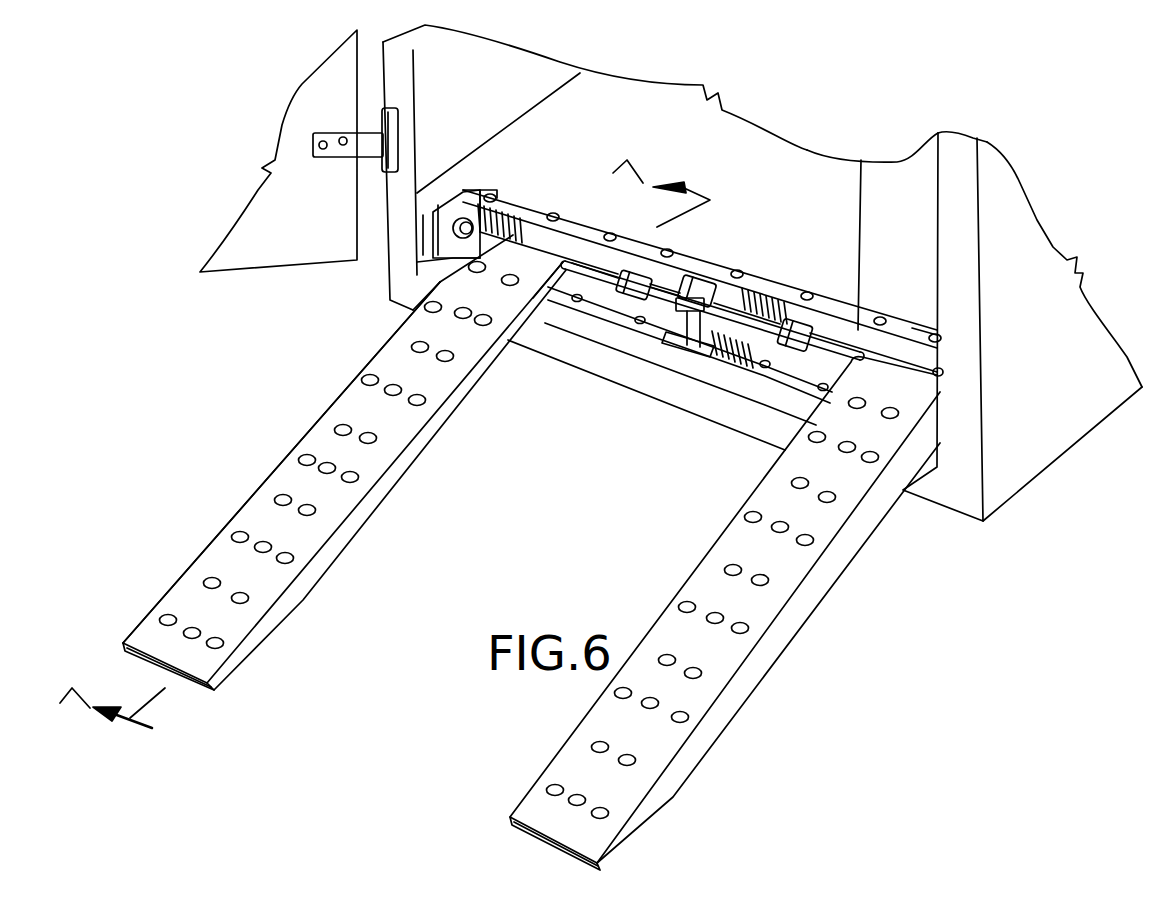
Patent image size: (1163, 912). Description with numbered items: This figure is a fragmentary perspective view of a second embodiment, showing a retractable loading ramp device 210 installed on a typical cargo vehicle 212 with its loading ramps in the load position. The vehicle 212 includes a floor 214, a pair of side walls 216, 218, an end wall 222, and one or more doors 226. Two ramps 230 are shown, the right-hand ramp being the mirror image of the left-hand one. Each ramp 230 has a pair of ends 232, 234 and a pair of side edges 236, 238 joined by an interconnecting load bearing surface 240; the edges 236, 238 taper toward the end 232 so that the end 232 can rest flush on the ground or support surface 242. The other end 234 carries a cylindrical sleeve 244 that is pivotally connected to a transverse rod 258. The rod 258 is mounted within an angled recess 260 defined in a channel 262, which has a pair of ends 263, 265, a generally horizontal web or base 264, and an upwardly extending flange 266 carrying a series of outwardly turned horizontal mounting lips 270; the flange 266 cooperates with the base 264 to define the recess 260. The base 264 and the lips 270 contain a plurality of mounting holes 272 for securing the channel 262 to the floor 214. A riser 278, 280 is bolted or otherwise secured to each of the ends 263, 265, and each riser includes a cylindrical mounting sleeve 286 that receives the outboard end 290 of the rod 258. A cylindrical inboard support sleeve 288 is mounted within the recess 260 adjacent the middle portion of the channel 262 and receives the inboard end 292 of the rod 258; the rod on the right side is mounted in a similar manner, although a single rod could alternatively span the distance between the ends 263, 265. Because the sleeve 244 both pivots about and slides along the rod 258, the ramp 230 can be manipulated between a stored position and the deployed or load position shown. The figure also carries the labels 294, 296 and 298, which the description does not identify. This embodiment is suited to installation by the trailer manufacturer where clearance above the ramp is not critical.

The retractable loading ramp device 210 is at (872, 600).
The cargo vehicle 212 is at (1040, 437).
The floor 214 is at (926, 204).
The side wall 216 is at (476, 117).
The side wall 218 is at (1062, 357).
The end wall 222 is at (953, 160).
The door 226 is at (330, 247).
The ramp 230 is at (357, 520).
The end of ramp 232 is at (152, 637).
The end of ramp 234 is at (412, 318).
The side edge 236 is at (290, 597).
The side edge 238 is at (200, 553).
The load bearing surface 240 is at (367, 407).
The ground or support surface 242 is at (400, 746).
The cylindrical sleeve 244 is at (556, 300).
The transverse rod 258 is at (580, 258).
The recess 260 is at (690, 278).
The channel 262 is at (602, 322).
The end of channel 263 is at (487, 190).
The web or base 264 is at (787, 368).
The end of channel 265 is at (918, 332).
The flange 266 is at (861, 160).
The mounting lips 270 is at (527, 207).
The mounting holes 272 is at (807, 292).
The riser 278 is at (443, 207).
The riser 280 is at (960, 370).
The cylindrical mounting sleeve 286 is at (455, 230).
The inboard support sleeve 288 is at (705, 357).
The outboard end of rod 290 is at (390, 301).
The inboard end of rod 292 is at (727, 275).
The spring 294 is at (685, 282).
The clip 296 is at (628, 273).
The base plate 298 is at (623, 377).